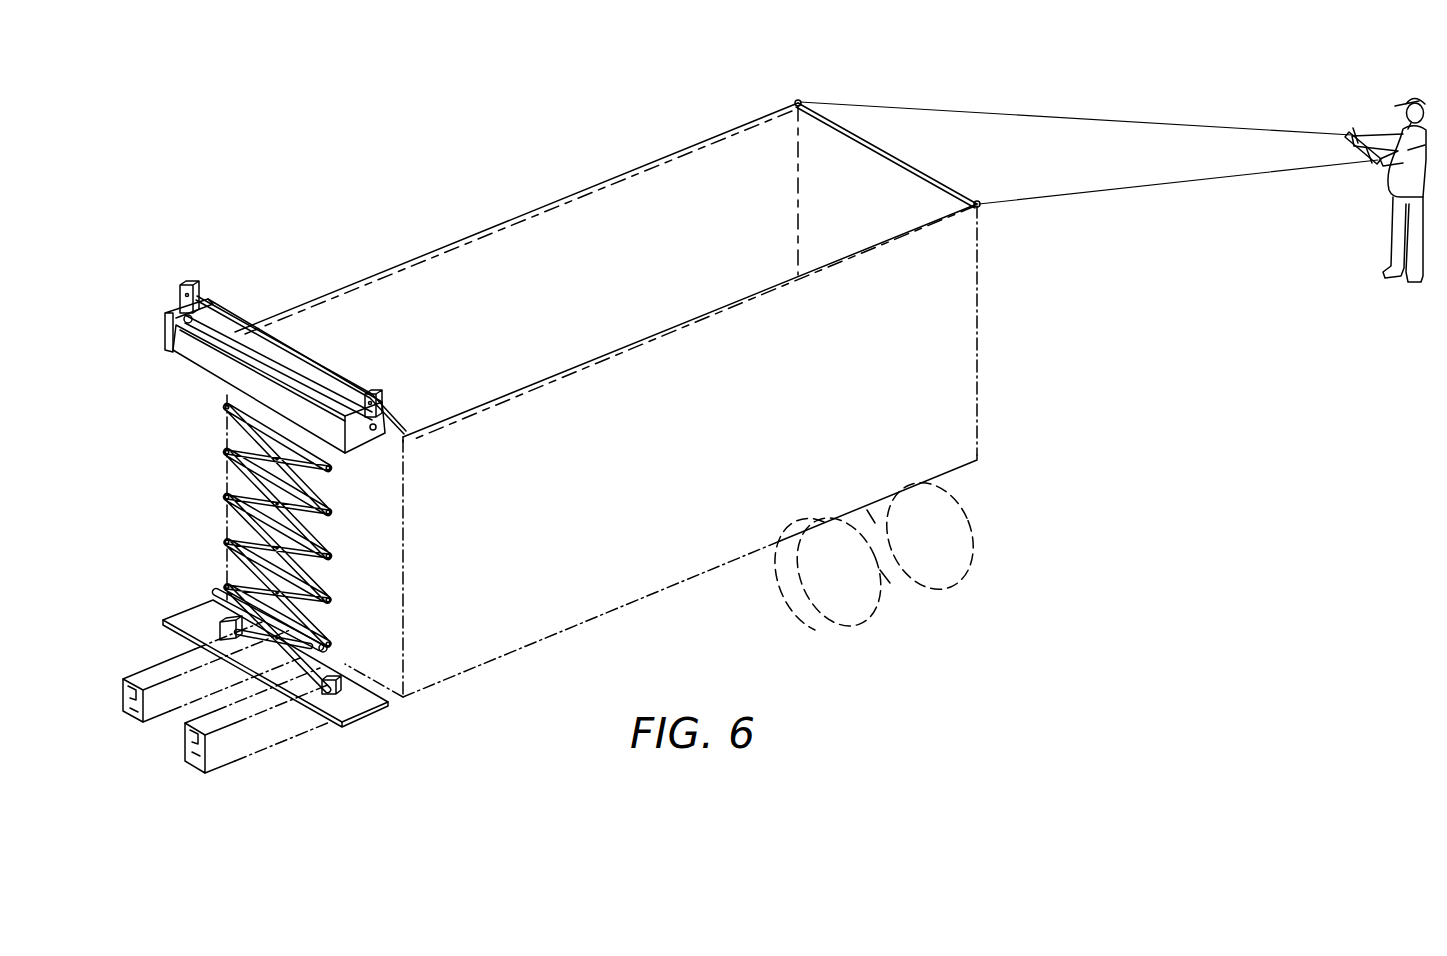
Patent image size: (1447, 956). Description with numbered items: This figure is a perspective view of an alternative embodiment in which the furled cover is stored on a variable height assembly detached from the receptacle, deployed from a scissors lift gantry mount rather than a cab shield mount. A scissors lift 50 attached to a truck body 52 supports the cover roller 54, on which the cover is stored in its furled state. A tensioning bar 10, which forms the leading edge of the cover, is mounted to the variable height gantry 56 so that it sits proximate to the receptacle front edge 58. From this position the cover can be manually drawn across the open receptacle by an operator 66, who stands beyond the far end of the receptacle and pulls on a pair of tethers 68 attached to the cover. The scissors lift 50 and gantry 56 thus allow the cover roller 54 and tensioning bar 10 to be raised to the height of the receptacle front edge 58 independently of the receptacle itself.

The tensioning bar 10 is at (298, 367).
The scissors lift 50 is at (238, 457).
The truck body 52 is at (212, 622).
The cover roller 54 is at (250, 403).
The variable height gantry 56 is at (222, 368).
The receptacle front edge 58 is at (392, 440).
The operator 66 is at (1378, 132).
The tethers 68 is at (1105, 123).